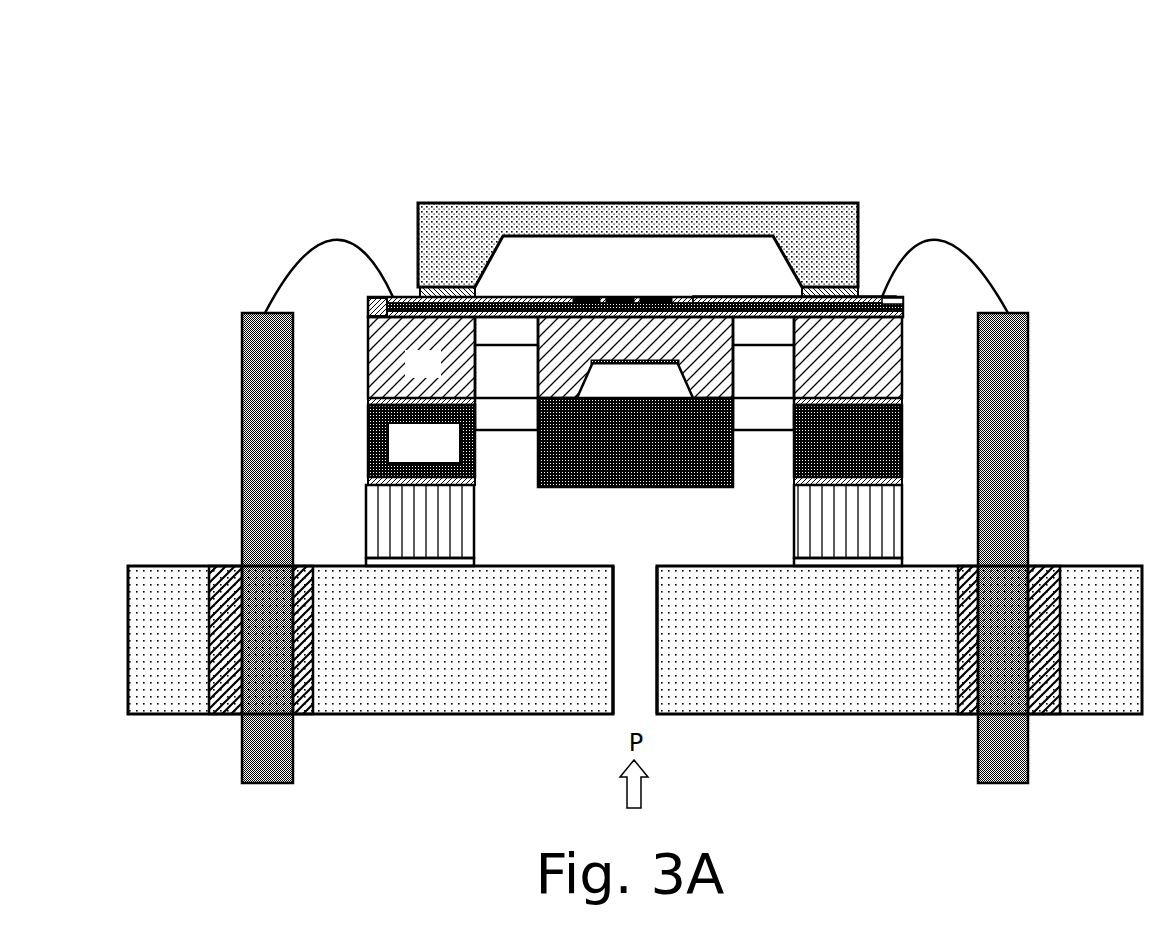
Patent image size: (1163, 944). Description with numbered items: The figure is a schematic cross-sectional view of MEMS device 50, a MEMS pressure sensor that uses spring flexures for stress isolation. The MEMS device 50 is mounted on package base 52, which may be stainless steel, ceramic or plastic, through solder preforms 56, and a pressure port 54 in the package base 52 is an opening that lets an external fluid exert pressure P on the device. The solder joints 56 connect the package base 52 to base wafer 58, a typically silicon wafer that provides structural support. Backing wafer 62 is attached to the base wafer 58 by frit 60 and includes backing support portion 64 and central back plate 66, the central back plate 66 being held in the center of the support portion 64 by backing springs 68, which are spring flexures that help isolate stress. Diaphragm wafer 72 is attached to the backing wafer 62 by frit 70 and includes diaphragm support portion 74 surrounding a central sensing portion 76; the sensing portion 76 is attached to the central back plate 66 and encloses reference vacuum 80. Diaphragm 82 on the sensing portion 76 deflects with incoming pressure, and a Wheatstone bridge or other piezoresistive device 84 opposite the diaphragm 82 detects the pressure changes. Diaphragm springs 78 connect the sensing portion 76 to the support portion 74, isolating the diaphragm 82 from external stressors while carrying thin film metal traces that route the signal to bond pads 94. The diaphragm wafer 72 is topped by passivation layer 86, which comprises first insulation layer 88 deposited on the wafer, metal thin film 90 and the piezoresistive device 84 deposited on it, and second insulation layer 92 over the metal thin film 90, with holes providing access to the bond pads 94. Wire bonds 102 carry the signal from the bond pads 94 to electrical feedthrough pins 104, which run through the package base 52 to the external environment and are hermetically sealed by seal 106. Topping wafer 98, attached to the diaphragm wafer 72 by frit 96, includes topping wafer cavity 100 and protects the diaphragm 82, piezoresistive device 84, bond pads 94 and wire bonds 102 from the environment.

The MEMS device 50 is at (320, 100).
The package base 52 is at (771, 659).
The pressure port 54 is at (640, 642).
The solder preforms 56 is at (412, 566).
The base wafer 58 is at (368, 518).
The frit 60 is at (368, 480).
The backing wafer 62 is at (368, 436).
The backing support portion 64 is at (408, 457).
The central back plate 66 is at (627, 462).
The backing springs 68 is at (368, 409).
The frit 70 is at (368, 400).
The diaphragm wafer 72 is at (368, 347).
The diaphragm support portion 74 is at (407, 377).
The sensing portion 76 is at (710, 368).
The diaphragm springs 78 is at (507, 328).
The reference vacuum 80 is at (660, 385).
The diaphragm 82 is at (680, 300).
The piezoresistive device 84 is at (647, 297).
The passivation layer 86 is at (908, 297).
The first insulation layer 88 is at (833, 287).
The metal thin film 90 is at (790, 297).
The second insulation layer 92 is at (760, 297).
The bond pads 94 is at (877, 297).
The frit 96 is at (400, 293).
The topping wafer 98 is at (437, 215).
The topping wafer cavity 100 is at (605, 258).
The wire bonds 102 is at (985, 262).
The electrical feedthrough pins 104 is at (1030, 330).
The seal 106 is at (1050, 566).